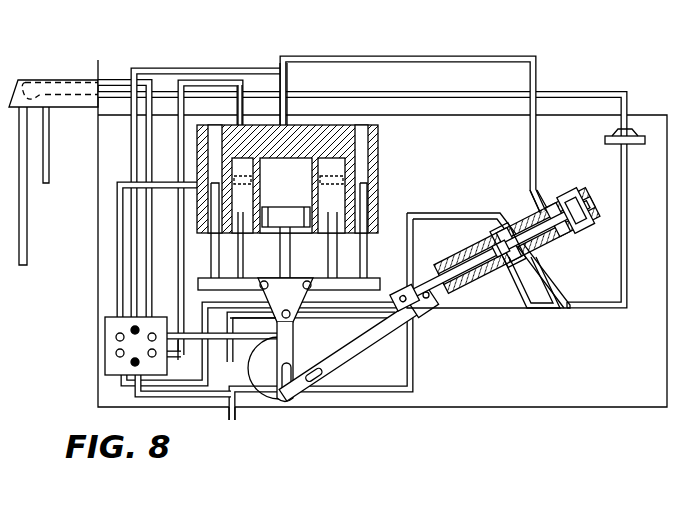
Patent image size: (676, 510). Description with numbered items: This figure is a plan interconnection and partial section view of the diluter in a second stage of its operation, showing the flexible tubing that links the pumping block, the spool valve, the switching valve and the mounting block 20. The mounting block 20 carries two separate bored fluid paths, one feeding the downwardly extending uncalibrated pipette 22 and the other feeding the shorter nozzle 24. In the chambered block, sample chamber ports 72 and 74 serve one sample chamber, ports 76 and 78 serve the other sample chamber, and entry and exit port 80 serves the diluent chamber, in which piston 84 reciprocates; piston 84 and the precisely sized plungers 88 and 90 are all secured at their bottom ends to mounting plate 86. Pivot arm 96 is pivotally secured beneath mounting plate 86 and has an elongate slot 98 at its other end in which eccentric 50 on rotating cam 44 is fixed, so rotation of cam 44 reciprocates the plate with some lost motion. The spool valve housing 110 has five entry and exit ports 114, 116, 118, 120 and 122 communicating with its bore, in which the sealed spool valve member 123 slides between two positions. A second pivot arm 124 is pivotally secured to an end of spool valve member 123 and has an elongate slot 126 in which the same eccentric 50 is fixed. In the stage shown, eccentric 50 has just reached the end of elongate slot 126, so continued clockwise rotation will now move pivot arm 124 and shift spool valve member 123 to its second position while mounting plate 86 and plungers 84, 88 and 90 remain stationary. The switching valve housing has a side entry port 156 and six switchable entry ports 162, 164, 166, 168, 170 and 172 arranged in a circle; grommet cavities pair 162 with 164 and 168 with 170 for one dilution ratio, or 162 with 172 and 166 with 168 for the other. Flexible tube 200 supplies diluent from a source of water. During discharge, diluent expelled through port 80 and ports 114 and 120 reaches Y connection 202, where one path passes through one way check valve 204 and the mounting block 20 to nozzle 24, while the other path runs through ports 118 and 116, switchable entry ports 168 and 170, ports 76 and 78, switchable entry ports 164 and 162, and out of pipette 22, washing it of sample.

The mounting block 20 is at (52, 80).
The uncalibrated pipette 22 is at (27, 214).
The nozzle 24 is at (49, 155).
The rotating cam 44 is at (265, 344).
The eccentric 50 is at (289, 394).
The entry and exit port 72 is at (253, 180).
The entry and exit port 74 is at (242, 124).
The entry and exit port 76 is at (312, 190).
The entry and exit port 78 is at (344, 124).
The entry and exit port 80 is at (289, 124).
The piston 84 is at (289, 248).
The mounting plate 86 is at (364, 268).
The plunger 88 is at (220, 262).
The plunger 90 is at (291, 278).
The pivot arm 96 is at (300, 330).
The elongate slot 98 is at (262, 362).
The spool valve housing 110 is at (456, 250).
The entry and exit port 114 is at (545, 192).
The entry and exit port 116 is at (510, 218).
The entry and exit port 118 is at (508, 290).
The entry and exit port 120 is at (548, 265).
The entry and exit port 122 is at (583, 246).
The spool valve member 123 is at (425, 300).
The pivot arm 124 is at (360, 347).
The elongate slot 126 is at (315, 383).
The entry port 156 is at (180, 380).
The switchable entry port 162 is at (153, 332).
The switchable entry port 164 is at (131, 328).
The switchable entry port 166 is at (116, 336).
The switchable entry port 168 is at (116, 352).
The switchable entry port 170 is at (131, 364).
The switchable entry port 172 is at (152, 360).
The flexible tube 200 is at (235, 420).
The Y connection 202 is at (552, 312).
The one way check valve 204 is at (605, 140).